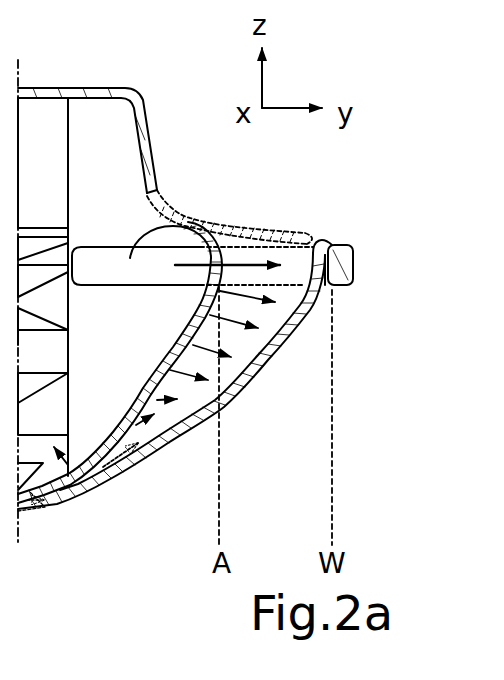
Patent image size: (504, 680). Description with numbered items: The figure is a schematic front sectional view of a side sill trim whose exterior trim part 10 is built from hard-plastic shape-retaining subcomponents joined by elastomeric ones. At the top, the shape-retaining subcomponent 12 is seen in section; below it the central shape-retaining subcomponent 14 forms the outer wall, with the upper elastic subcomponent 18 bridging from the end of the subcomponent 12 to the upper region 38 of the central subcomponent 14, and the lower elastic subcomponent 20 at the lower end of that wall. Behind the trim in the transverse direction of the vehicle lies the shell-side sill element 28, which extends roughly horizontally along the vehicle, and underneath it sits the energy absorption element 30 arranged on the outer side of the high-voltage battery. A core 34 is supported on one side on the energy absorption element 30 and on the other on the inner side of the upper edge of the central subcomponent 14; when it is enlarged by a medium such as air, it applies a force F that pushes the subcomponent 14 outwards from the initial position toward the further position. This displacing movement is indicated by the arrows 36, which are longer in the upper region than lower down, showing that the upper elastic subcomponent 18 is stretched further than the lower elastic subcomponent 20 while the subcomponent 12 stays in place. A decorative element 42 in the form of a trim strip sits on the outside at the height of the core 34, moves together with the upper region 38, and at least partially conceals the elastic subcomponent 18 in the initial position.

The exterior trim part 10 is at (378, 155).
The shape-retaining subcomponent 12 is at (148, 113).
The central shape-retaining subcomponent 14 is at (275, 350).
The upper elastic subcomponent 18 is at (233, 213).
The lower elastic subcomponent 20 is at (28, 512).
The sill element 28 is at (45, 150).
The energy absorption element 30 is at (80, 478).
The core 34 is at (168, 228).
The arrows 36 is at (150, 440).
The upper region of the shape-retaining subcomponent 38 is at (330, 291).
The decorative element 42 is at (353, 266).
The force F is at (245, 249).